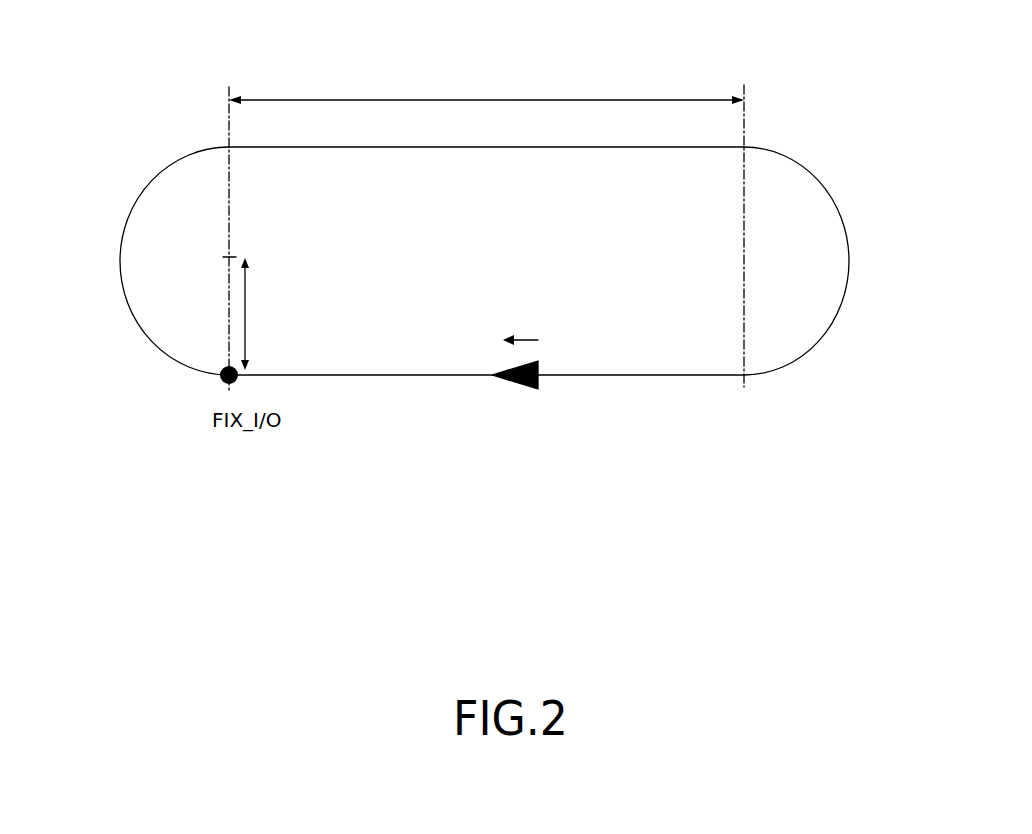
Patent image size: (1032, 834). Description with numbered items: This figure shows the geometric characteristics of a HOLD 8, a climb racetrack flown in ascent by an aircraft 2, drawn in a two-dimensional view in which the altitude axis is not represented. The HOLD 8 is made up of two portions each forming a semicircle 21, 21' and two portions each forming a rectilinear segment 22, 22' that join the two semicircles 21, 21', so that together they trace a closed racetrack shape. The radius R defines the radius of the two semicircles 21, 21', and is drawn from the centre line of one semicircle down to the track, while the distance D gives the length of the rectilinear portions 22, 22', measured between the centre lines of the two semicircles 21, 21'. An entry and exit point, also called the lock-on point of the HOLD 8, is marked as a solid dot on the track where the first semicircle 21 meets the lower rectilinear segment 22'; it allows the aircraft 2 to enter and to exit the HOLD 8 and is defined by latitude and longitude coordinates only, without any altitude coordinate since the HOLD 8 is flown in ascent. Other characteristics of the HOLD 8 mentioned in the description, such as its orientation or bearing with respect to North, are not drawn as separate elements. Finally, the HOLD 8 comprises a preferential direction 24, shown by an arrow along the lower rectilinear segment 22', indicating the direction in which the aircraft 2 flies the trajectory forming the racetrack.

The aircraft 2 is at (518, 387).
The HOLD 8 is at (94, 216).
The semicircle 21 is at (170, 303).
The semicircle 21' is at (835, 255).
The rectilinear segment 22 is at (486, 189).
The rectilinear segment 22' is at (489, 429).
The preferential direction 24 is at (538, 332).
The distance D is at (453, 90).
The radius R is at (248, 313).